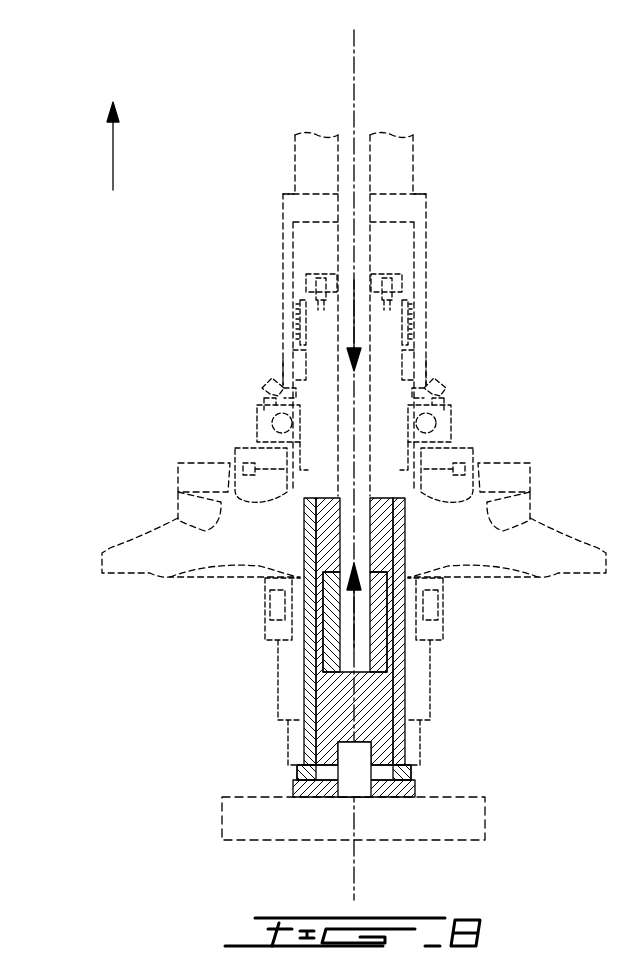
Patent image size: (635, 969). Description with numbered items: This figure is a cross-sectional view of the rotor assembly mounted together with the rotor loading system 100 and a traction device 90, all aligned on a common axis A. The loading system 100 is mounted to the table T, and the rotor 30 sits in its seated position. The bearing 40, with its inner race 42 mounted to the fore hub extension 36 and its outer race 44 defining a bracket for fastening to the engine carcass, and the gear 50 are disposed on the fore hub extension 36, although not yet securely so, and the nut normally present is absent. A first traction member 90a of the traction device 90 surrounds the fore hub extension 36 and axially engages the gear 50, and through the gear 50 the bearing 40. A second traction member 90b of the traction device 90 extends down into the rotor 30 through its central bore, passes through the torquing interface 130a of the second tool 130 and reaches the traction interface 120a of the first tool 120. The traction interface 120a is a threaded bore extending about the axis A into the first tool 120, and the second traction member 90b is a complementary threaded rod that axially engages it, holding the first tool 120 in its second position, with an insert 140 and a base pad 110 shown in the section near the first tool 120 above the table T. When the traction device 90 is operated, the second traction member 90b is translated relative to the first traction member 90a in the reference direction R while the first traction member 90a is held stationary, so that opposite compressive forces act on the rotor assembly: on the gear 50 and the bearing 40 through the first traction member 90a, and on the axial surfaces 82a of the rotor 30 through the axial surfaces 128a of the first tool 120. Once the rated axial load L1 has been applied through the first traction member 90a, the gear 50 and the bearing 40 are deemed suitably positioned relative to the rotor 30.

The axis A is at (356, 48).
The reference direction R is at (115, 160).
The axial loading device (traction device) 90 is at (446, 156).
The fore hub extension 36 is at (427, 342).
The first traction member 90a is at (427, 368).
The gear 50 is at (265, 380).
The bearing 40 is at (262, 426).
The outer race 44 is at (444, 412).
The inner race 42 is at (439, 448).
The rotor 30 is at (172, 522).
The second traction member 90b is at (438, 594).
The second tool 130 is at (398, 707).
The torquing interface 130a is at (405, 550).
The traction interface 120a is at (362, 632).
The insert 140 is at (385, 668).
The rated axial load L1 is at (355, 312).
The base pad 110 is at (416, 790).
The first tool 120 is at (298, 775).
The axial surfaces 82a is at (300, 770).
The axial surfaces of first tool 128a is at (406, 763).
The table T is at (485, 828).
The rotor loading system 100 is at (186, 858).